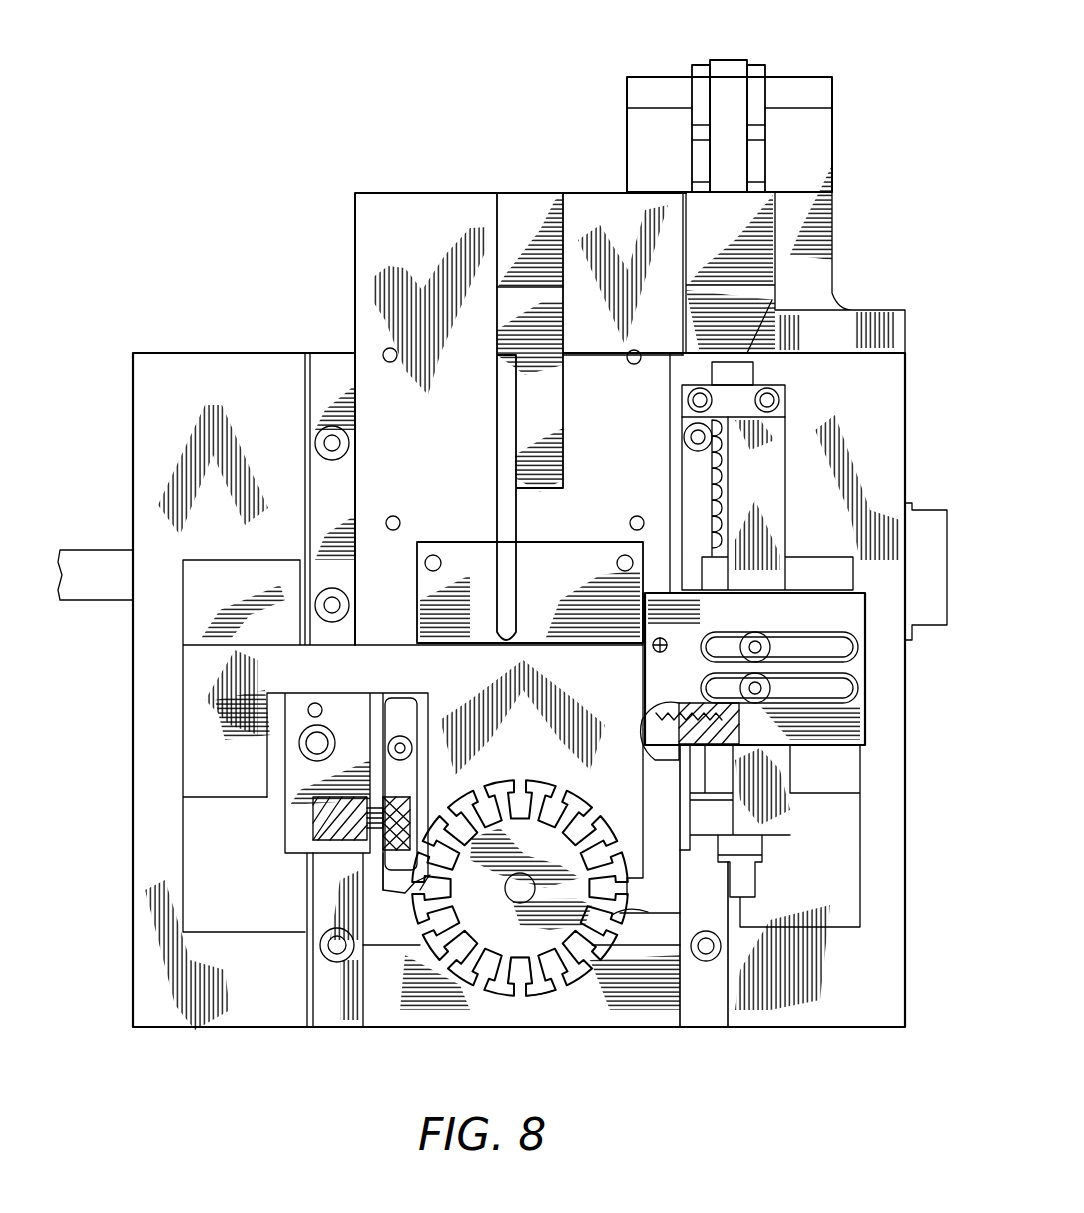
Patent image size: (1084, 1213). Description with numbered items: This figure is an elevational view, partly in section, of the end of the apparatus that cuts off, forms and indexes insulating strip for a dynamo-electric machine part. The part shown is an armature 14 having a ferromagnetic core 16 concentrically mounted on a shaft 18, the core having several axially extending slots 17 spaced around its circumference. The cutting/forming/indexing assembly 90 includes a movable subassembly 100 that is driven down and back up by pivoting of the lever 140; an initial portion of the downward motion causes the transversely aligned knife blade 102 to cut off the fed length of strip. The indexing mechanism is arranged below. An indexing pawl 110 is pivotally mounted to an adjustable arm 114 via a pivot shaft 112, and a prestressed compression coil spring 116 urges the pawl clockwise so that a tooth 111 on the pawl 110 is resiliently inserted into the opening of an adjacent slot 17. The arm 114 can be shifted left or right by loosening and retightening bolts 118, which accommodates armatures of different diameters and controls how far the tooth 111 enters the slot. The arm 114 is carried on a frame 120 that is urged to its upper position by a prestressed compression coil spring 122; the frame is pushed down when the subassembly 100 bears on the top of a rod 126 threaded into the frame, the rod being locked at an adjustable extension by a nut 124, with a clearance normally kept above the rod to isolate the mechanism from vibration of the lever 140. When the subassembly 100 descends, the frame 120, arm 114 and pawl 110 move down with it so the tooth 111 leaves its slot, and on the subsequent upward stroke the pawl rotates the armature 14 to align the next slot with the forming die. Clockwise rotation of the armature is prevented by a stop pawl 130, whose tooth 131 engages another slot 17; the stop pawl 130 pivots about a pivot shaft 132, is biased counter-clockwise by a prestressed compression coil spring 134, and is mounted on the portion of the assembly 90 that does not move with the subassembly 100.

The cutting/forming/indexing assembly 90 is at (876, 176).
The movable subassembly 100 is at (800, 253).
The knife blade 102 is at (465, 550).
The indexing pawl 110 is at (658, 905).
The tooth 111 is at (640, 930).
The pivot shaft 112 is at (672, 638).
The adjustable arm 114 is at (866, 735).
The compression coil spring 116 is at (713, 742).
The bolts 118 is at (762, 690).
The frame 120 is at (764, 482).
The compression coil spring 122 is at (712, 486).
The nut 124 is at (750, 372).
The rod 126 is at (772, 300).
The stop pawl 130 is at (420, 760).
The tooth 131 is at (400, 895).
The pivot shaft 132 is at (400, 736).
The compression coil spring 134 is at (315, 822).
The lever 140 is at (755, 66).
The armature 14 is at (502, 920).
The ferromagnetic core 16 is at (545, 985).
The slots 17 is at (490, 968).
The shaft 18 is at (501, 893).